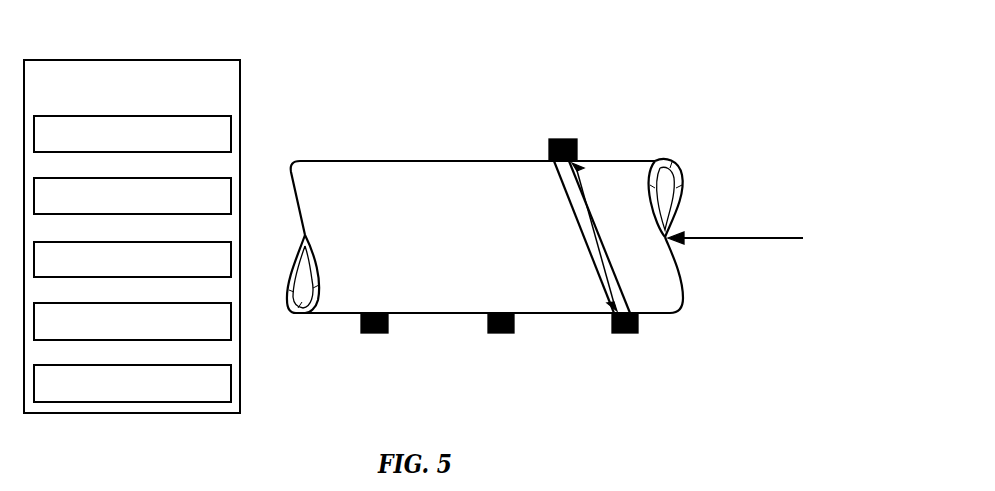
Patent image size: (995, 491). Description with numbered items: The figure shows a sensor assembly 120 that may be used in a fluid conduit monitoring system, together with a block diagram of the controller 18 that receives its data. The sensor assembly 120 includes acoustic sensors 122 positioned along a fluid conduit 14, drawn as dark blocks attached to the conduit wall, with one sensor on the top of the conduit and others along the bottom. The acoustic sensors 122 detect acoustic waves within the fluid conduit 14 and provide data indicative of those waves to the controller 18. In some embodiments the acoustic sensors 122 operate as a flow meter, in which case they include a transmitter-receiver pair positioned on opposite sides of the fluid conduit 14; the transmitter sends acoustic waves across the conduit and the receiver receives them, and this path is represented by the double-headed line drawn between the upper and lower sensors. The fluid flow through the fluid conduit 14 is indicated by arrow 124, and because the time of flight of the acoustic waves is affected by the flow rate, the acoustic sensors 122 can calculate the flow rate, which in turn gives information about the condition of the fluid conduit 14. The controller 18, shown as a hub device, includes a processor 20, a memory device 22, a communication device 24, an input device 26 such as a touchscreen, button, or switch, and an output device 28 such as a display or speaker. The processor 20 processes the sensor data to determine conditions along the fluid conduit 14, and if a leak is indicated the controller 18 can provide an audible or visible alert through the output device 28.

The fluid conduit 14 is at (430, 160).
The controller 18 is at (133, 60).
The processor 20 is at (133, 116).
The memory device 22 is at (133, 178).
The communication device 24 is at (133, 242).
The input device 26 is at (133, 303).
The output device 28 is at (133, 365).
The sensor assembly 120 is at (523, 41).
The acoustic sensors 122 is at (560, 140).
The arrow 124 is at (733, 238).